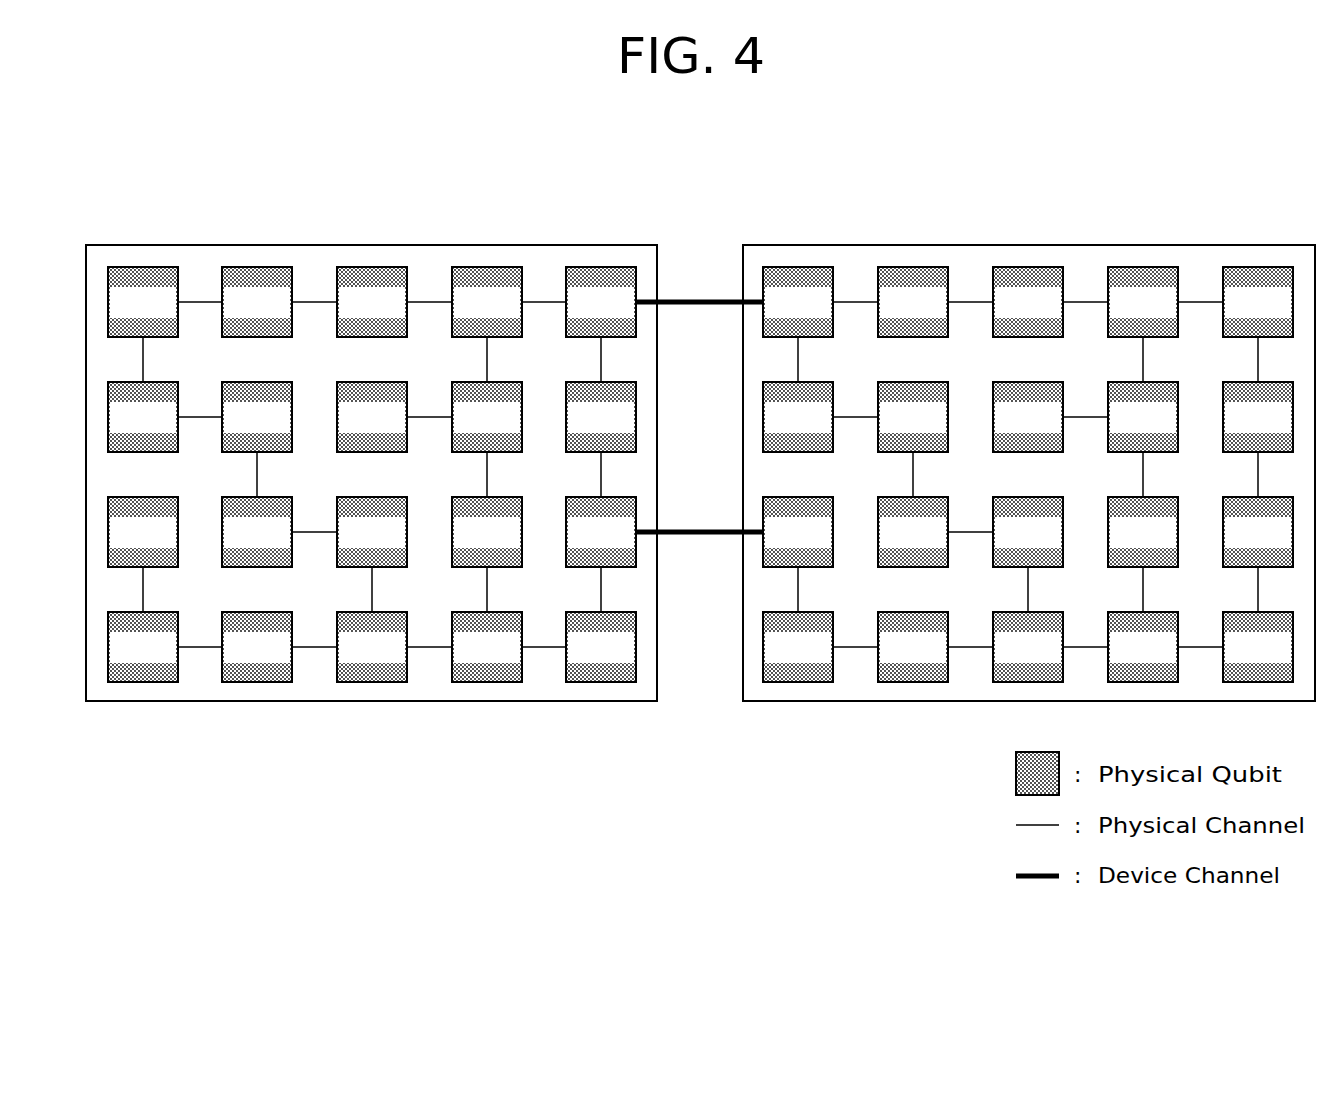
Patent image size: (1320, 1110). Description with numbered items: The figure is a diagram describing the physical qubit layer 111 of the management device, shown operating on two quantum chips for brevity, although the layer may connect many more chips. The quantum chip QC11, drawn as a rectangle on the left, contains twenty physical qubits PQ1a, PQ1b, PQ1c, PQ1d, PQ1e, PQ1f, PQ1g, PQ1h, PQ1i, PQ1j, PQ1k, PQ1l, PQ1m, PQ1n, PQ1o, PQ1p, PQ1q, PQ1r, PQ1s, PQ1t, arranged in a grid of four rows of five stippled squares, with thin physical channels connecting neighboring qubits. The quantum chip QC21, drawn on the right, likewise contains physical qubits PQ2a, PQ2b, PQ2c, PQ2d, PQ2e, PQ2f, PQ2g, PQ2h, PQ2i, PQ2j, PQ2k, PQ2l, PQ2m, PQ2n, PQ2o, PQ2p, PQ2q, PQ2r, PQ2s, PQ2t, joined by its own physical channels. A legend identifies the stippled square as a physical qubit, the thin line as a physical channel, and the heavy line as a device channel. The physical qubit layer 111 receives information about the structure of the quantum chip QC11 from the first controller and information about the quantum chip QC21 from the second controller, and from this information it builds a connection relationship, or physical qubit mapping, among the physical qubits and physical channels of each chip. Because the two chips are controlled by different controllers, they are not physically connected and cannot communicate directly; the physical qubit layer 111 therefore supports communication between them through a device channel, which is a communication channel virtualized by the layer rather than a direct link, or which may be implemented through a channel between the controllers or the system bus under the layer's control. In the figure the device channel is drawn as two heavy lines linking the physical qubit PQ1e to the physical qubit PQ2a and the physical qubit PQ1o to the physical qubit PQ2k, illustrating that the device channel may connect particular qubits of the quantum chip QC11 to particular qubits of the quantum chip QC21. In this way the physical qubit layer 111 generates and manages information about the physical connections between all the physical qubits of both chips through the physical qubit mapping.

The physical qubit layer 111 is at (1300, 137).
The quantum chip QC11 is at (620, 245).
The quantum chip QC21 is at (1277, 245).
The physical qubit PQ1a is at (170, 317).
The physical qubit PQ1b is at (284, 317).
The physical qubit PQ1c is at (399, 317).
The physical qubit PQ1d is at (514, 317).
The physical qubit PQ1e is at (628, 317).
The physical qubit PQ1f is at (170, 432).
The physical qubit PQ1g is at (284, 432).
The physical qubit PQ1h is at (399, 432).
The physical qubit PQ1i is at (514, 432).
The physical qubit PQ1j is at (628, 432).
The physical qubit PQ1k is at (170, 547).
The physical qubit PQ1l is at (284, 547).
The physical qubit PQ1m is at (399, 547).
The physical qubit PQ1n is at (514, 547).
The physical qubit PQ1o is at (628, 547).
The physical qubit PQ1p is at (170, 662).
The physical qubit PQ1q is at (284, 662).
The physical qubit PQ1r is at (399, 662).
The physical qubit PQ1s is at (514, 662).
The physical qubit PQ1t is at (628, 662).
The physical qubit PQ2a is at (825, 317).
The physical qubit PQ2b is at (940, 317).
The physical qubit PQ2c is at (1055, 317).
The physical qubit PQ2d is at (1170, 317).
The physical qubit PQ2e is at (1285, 317).
The physical qubit PQ2f is at (825, 432).
The physical qubit PQ2g is at (940, 432).
The physical qubit PQ2h is at (1055, 432).
The physical qubit PQ2i is at (1170, 432).
The physical qubit PQ2j is at (1285, 432).
The physical qubit PQ2k is at (825, 547).
The physical qubit PQ2l is at (940, 547).
The physical qubit PQ2m is at (1055, 547).
The physical qubit PQ2n is at (1170, 547).
The physical qubit PQ2o is at (1285, 547).
The physical qubit PQ2p is at (825, 662).
The physical qubit PQ2q is at (940, 662).
The physical qubit PQ2r is at (1055, 662).
The physical qubit PQ2s is at (1170, 662).
The physical qubit PQ2t is at (1285, 662).